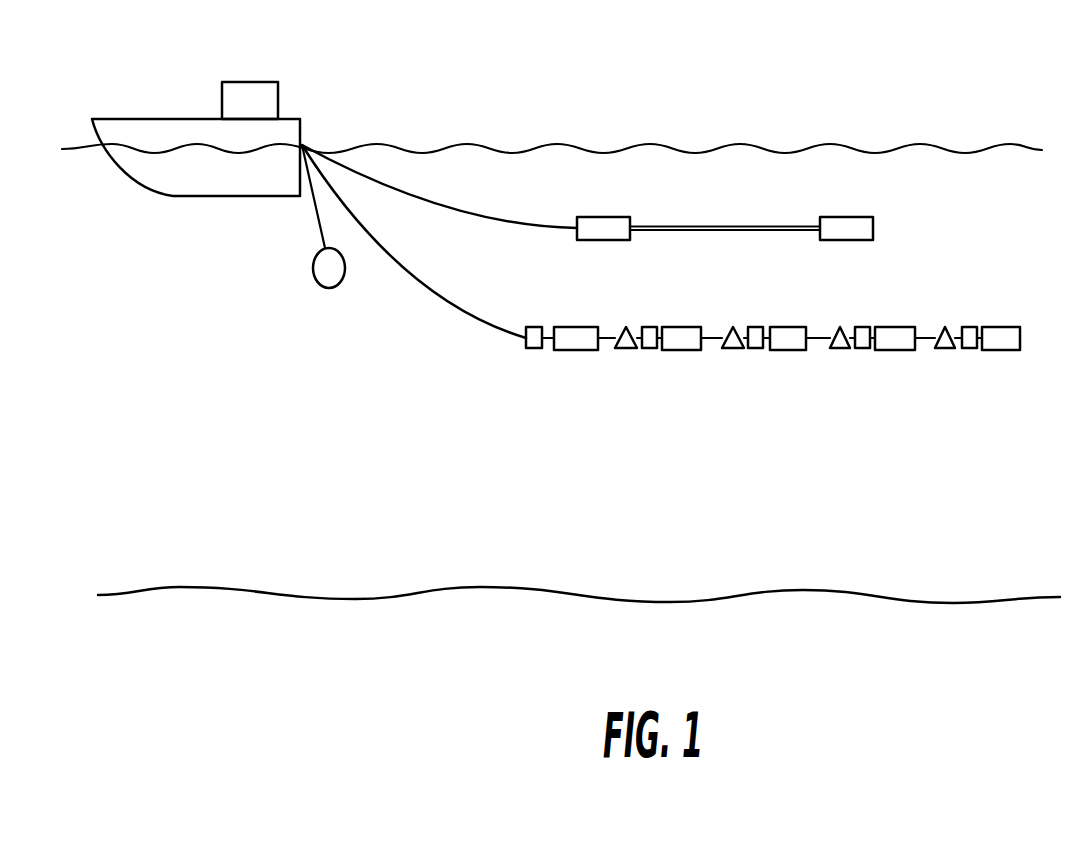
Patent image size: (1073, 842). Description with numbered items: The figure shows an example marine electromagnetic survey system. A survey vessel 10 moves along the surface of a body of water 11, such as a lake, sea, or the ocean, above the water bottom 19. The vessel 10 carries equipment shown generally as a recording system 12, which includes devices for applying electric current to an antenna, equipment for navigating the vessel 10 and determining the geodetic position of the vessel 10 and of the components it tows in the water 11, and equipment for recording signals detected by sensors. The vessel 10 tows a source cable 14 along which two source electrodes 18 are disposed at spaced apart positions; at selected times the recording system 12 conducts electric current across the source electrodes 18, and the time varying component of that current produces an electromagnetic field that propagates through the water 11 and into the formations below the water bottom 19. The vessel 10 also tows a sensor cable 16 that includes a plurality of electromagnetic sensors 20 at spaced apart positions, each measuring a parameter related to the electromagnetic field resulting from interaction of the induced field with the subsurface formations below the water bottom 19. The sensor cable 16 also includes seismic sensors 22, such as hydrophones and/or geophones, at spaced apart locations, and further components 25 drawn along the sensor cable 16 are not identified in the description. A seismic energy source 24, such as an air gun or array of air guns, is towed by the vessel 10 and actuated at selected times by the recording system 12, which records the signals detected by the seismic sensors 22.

The survey vessel 10 is at (143, 118).
The body of water 11 is at (195, 367).
The recording system 12 is at (248, 82).
The source cable 14 is at (466, 213).
The sensor cable 16 is at (423, 288).
The source electrodes 18 is at (603, 241).
The water bottom 19 is at (367, 598).
The electromagnetic sensors 20 is at (577, 350).
The seismic sensors 22 is at (625, 349).
The seismic energy source 24 is at (330, 290).
The coupler 25 is at (534, 349).